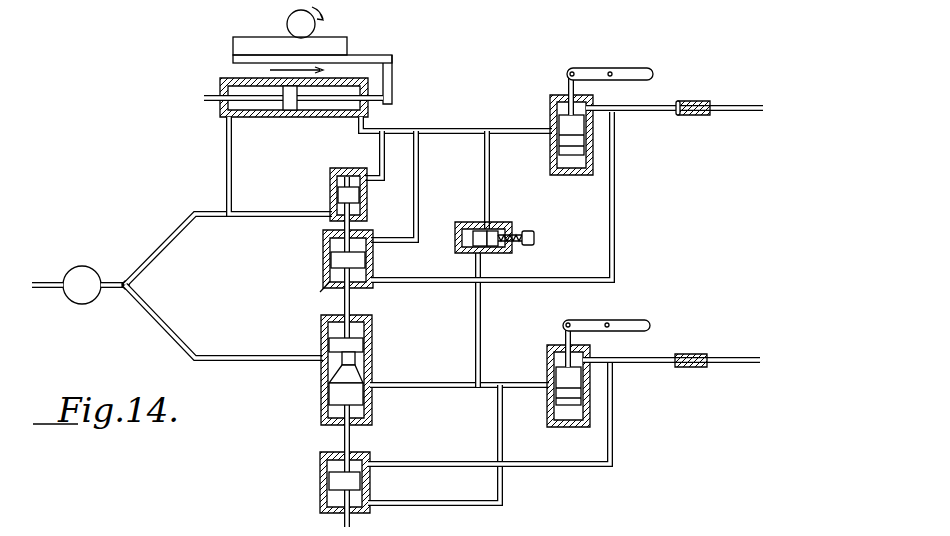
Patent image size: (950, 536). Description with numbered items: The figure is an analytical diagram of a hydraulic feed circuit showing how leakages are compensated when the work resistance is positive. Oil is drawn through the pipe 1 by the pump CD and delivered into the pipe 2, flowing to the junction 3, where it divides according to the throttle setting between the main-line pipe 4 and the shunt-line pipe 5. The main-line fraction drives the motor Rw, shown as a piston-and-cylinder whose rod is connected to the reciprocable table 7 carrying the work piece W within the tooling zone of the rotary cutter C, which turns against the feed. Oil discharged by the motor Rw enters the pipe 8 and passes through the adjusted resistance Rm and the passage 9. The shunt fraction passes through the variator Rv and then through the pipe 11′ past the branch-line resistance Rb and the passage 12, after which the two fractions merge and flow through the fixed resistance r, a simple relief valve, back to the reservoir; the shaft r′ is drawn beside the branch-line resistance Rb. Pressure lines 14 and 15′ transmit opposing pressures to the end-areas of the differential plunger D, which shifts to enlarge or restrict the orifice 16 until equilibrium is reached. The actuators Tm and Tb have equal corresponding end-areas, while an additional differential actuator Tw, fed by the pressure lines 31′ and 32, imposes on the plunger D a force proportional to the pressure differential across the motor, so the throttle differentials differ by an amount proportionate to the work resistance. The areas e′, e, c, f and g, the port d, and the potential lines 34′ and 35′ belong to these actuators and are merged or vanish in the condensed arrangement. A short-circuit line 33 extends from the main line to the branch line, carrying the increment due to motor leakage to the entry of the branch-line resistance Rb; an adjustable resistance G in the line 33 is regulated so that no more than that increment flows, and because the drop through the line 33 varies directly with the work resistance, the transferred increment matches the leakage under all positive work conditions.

The pipe 1 is at (49, 281).
The pipe 2 is at (116, 283).
The junction 3 is at (133, 286).
The main-line pipe 4 is at (163, 242).
The shunt-line pipe 5 is at (165, 333).
The reciprocable table 7 is at (383, 60).
The pipe 8 is at (465, 129).
The passage 9 is at (548, 136).
The passage 12 is at (547, 390).
The pressure line 14 is at (418, 194).
The pressure line 15′ is at (430, 500).
The orifice 16 is at (375, 390).
The pipe 11′ is at (489, 393).
The pressure line 31′ is at (282, 210).
The pressure line 32 is at (382, 152).
The short-circuit line 33 is at (486, 161).
The potential line 34′ is at (435, 276).
The potential line 35′ is at (435, 461).
The work piece W is at (233, 44).
The rotary cutter C is at (305, 22).
The pump CD is at (82, 285).
The motor Rw is at (303, 120).
The adjusted resistance Rm is at (548, 110).
The branch-line resistance Rb is at (545, 360).
The variator Rv is at (372, 345).
The additional differential actuator Tw is at (329, 191).
The actuator Tm is at (322, 262).
The actuator Tb is at (319, 456).
The adjustable resistance G is at (503, 222).
The differential plunger D is at (346, 371).
The area c is at (368, 212).
The area e is at (330, 247).
The area e′ is at (356, 173).
The area f is at (318, 294).
The area g is at (329, 466).
The valve port d is at (329, 500).
The fixed resistance r is at (694, 85).
The brake shaft r′ is at (690, 340).